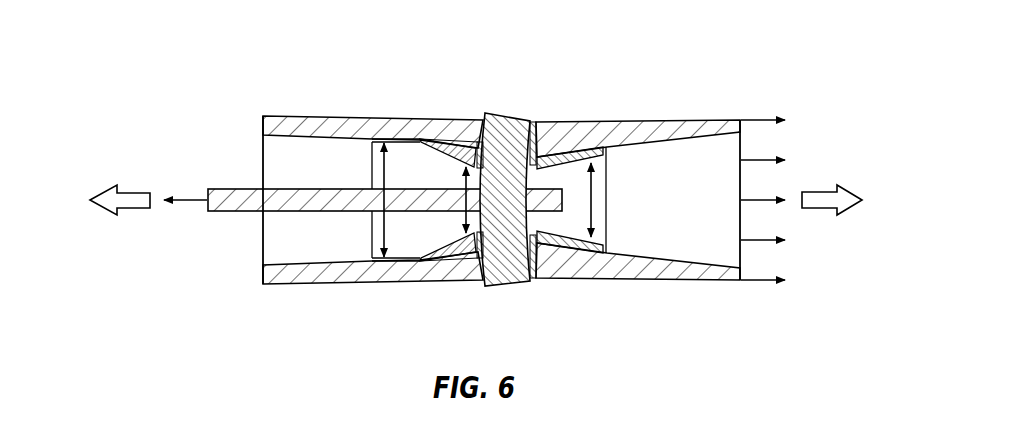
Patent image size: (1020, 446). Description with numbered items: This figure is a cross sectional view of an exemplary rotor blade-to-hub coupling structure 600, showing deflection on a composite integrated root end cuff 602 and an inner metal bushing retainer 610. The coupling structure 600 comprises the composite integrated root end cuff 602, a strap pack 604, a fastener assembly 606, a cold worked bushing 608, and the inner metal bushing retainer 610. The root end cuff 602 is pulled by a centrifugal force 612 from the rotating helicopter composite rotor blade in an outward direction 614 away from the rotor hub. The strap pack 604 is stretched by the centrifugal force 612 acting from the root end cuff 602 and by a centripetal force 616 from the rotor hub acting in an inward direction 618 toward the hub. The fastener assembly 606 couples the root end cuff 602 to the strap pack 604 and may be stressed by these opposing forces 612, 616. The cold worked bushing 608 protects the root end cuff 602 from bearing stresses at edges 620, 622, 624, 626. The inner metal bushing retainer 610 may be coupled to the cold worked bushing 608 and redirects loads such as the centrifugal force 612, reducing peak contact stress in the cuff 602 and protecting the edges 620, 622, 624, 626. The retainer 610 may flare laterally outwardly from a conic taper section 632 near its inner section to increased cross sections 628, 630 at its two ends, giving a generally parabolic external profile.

The rotor blade-to-hub coupling structure 600 is at (340, 40).
The composite integrated root end cuff 602 is at (288, 117).
The strap pack 604 is at (232, 188).
The fastener assembly 606 is at (503, 115).
The cold worked bushing 608 is at (481, 286).
The inner metal bushing retainer 610 is at (407, 139).
The centrifugal force 612 is at (817, 210).
The outward direction 614 is at (753, 282).
The centripetal force 616 is at (130, 211).
The inward direction 618 is at (187, 200).
The edge 620 is at (465, 150).
The edge 622 is at (556, 152).
The edge 624 is at (469, 257).
The edge 626 is at (545, 246).
The cross section 628 is at (383, 199).
The cross section 630 is at (603, 200).
The conic taper section 632 is at (463, 198).